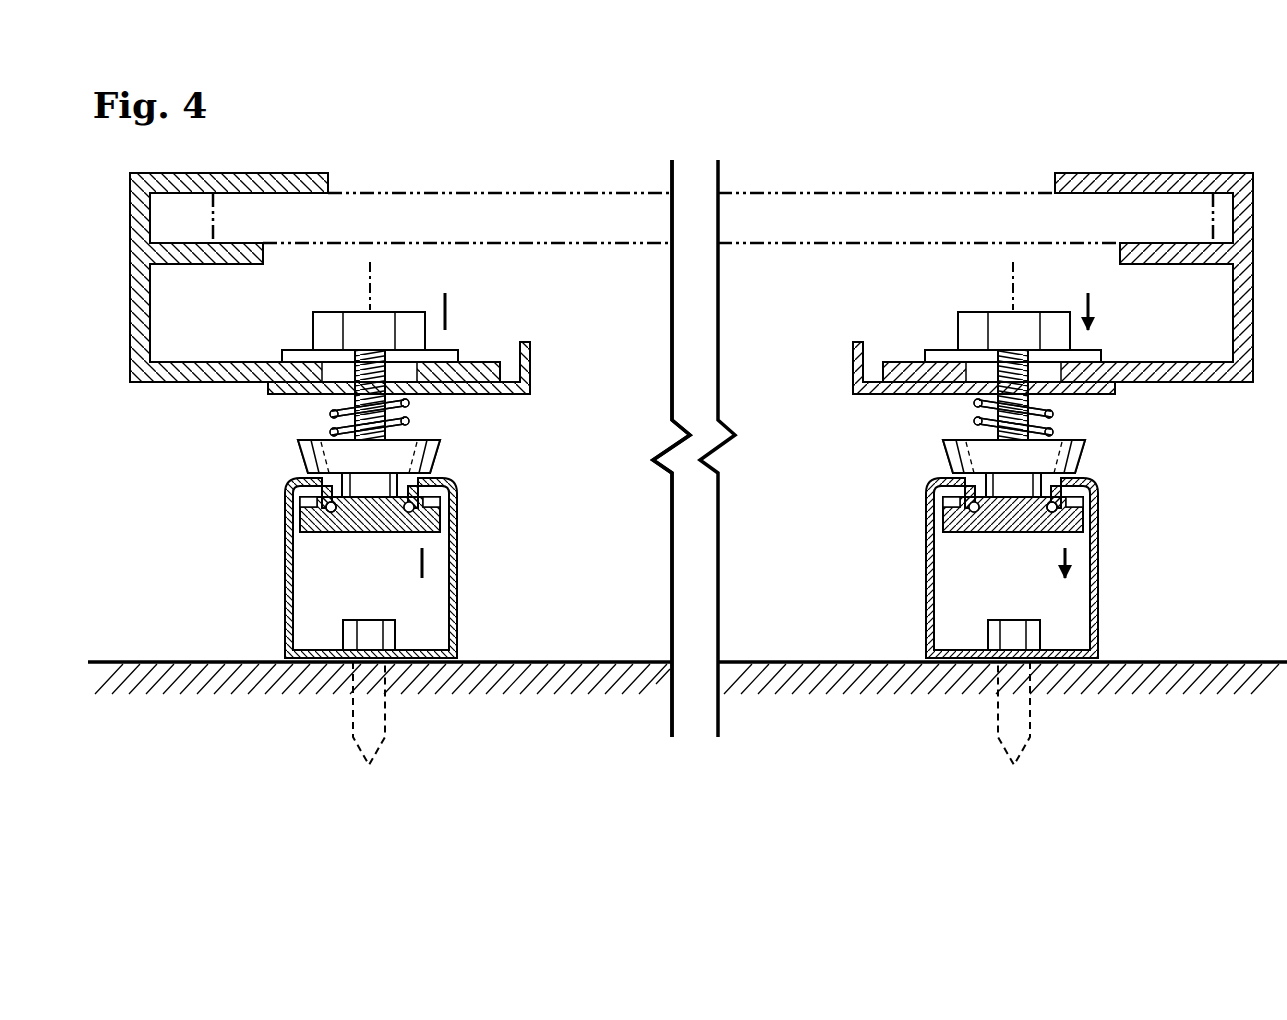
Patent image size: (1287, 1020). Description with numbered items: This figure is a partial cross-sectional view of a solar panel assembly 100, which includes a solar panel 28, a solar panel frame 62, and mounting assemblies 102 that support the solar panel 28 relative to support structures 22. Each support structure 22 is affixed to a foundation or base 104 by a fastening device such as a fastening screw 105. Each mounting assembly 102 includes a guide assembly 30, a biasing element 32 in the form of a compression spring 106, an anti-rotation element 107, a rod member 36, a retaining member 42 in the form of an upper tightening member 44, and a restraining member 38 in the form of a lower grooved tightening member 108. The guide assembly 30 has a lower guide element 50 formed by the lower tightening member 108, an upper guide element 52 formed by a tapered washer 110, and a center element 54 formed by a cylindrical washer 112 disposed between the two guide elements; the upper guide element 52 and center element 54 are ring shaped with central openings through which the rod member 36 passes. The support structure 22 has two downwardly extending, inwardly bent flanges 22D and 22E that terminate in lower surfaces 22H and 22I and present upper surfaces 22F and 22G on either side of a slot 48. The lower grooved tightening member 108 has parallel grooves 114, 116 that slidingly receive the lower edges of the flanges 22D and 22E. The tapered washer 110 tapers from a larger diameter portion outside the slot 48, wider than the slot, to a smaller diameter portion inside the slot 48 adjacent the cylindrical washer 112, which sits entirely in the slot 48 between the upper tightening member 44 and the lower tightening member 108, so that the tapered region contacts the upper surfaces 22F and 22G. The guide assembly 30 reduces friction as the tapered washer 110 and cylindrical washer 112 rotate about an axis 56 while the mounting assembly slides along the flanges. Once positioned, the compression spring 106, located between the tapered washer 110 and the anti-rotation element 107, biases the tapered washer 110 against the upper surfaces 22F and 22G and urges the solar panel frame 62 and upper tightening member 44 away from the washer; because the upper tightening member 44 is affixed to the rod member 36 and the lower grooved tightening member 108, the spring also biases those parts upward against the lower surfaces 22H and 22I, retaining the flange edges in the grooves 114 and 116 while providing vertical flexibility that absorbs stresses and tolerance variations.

The support structure 22 is at (283, 645).
The downwardly extending flange 22D is at (323, 499).
The downwardly extending flange 22E is at (431, 504).
The upper surface 22F is at (321, 480).
The upper surface 22G is at (419, 480).
The lower surface 22H is at (310, 503).
The lower surface 22I is at (412, 512).
The solar panel 28 is at (813, 246).
The guide assembly 30 is at (345, 534).
The biasing element 32 is at (327, 415).
The rod member 36 is at (355, 374).
The restraining member 38 is at (327, 537).
The retaining member 42 is at (330, 309).
The upper tightening member 44 is at (387, 311).
The slot 48 is at (408, 475).
The lower guide element 50 is at (327, 511).
The upper guide element 52 is at (298, 452).
The center element 54 is at (339, 487).
The axis 56 is at (366, 296).
The solar panel frame 62 is at (130, 322).
The solar panel assembly 100 is at (791, 156).
The mounting assembly 102 is at (530, 440).
The foundation or base 104 is at (573, 661).
The fastening screw 105 is at (383, 620).
The compression spring 106 is at (411, 405).
The anti-rotation element 107 is at (530, 362).
The lower grooved tightening member 108 is at (347, 536).
The tapered washer 110 is at (439, 456).
The cylindrical washer 112 is at (418, 495).
The groove 114 is at (336, 511).
The groove 116 is at (366, 533).